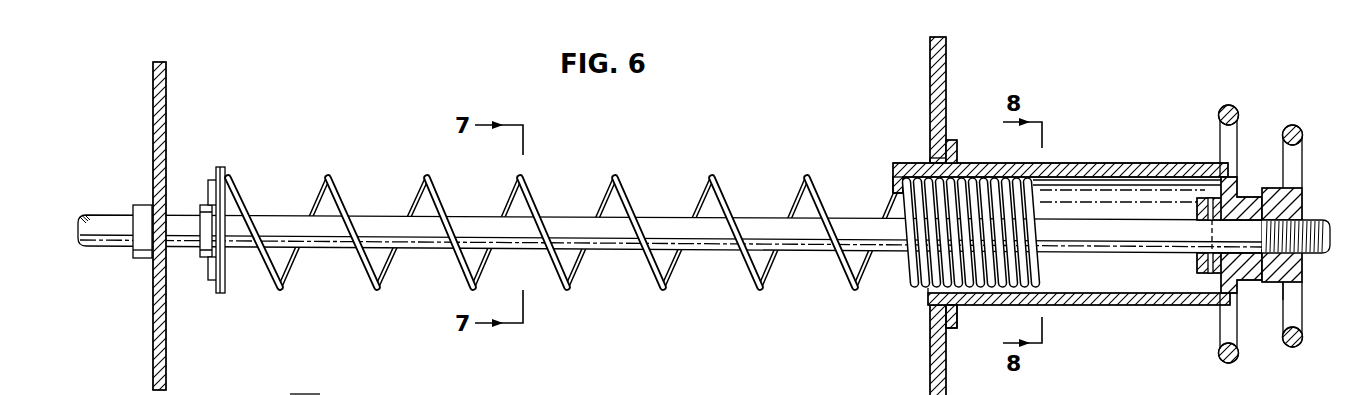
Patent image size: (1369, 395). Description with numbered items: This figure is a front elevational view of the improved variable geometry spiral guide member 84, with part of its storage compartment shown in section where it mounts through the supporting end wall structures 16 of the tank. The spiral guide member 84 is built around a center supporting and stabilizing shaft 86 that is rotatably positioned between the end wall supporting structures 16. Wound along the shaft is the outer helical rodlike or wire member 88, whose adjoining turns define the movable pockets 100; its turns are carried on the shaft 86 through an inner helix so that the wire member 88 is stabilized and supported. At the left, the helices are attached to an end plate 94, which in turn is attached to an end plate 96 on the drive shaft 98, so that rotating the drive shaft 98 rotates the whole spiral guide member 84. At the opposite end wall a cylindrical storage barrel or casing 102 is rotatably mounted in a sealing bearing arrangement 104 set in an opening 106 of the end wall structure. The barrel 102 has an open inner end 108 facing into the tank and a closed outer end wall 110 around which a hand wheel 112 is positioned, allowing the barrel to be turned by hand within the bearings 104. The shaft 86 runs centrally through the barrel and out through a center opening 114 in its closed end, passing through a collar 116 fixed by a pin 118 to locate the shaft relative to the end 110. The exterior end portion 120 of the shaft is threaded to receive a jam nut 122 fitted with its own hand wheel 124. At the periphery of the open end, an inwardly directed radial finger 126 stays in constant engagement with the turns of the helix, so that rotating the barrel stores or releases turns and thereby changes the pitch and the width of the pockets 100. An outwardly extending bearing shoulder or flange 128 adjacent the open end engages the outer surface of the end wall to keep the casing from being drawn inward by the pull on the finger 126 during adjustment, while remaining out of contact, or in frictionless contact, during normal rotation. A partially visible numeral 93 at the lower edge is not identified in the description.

The end wall supporting structure 16 is at (163, 112).
The spiral guide member 84 is at (541, 193).
The center supporting and stabilizing shaft 86 is at (600, 238).
The helical rodlike or wire member 88 is at (385, 258).
The partial numeral 93 is at (305, 392).
The end plate 94 is at (226, 175).
The end plate 96 is at (208, 268).
The drive shaft 98 is at (101, 222).
The movable pockets 100 is at (805, 270).
The cylindrical storage barrel or casing 102 is at (1057, 164).
The sealing bearing arrangement 104 is at (950, 162).
The opening 106 is at (940, 160).
The open inner end 108 is at (925, 290).
The closed outer end wall 110 is at (1228, 176).
The hand wheel 112 is at (1218, 112).
The center opening 114 is at (1234, 256).
The collar 116 is at (1197, 208).
The pin 118 is at (1197, 260).
The exterior end portion 120 is at (1275, 214).
The jam nut 122 is at (1297, 262).
The hand wheel 124 is at (1305, 315).
The inwardly directed radial finger 126 is at (872, 174).
The bearing shoulder or flange 128 is at (952, 318).